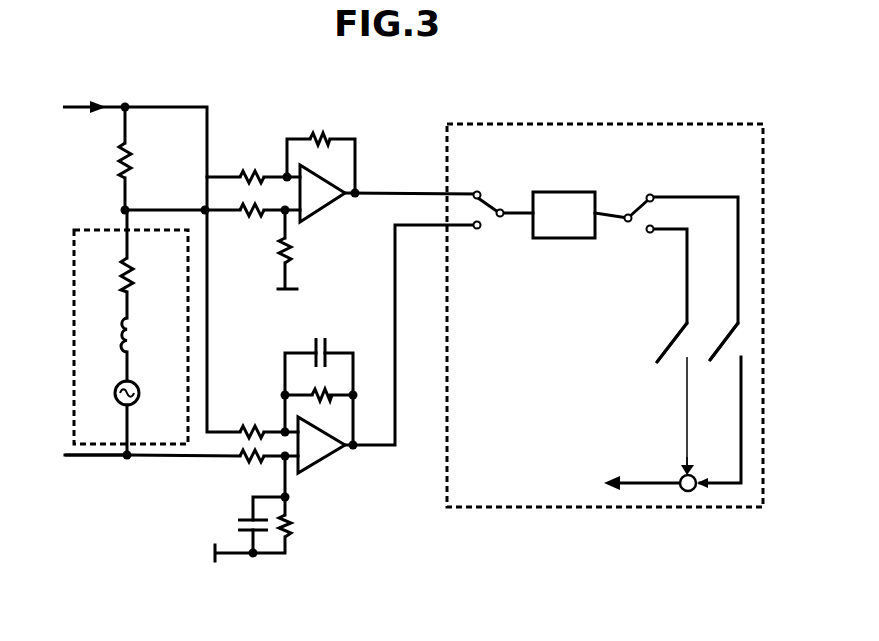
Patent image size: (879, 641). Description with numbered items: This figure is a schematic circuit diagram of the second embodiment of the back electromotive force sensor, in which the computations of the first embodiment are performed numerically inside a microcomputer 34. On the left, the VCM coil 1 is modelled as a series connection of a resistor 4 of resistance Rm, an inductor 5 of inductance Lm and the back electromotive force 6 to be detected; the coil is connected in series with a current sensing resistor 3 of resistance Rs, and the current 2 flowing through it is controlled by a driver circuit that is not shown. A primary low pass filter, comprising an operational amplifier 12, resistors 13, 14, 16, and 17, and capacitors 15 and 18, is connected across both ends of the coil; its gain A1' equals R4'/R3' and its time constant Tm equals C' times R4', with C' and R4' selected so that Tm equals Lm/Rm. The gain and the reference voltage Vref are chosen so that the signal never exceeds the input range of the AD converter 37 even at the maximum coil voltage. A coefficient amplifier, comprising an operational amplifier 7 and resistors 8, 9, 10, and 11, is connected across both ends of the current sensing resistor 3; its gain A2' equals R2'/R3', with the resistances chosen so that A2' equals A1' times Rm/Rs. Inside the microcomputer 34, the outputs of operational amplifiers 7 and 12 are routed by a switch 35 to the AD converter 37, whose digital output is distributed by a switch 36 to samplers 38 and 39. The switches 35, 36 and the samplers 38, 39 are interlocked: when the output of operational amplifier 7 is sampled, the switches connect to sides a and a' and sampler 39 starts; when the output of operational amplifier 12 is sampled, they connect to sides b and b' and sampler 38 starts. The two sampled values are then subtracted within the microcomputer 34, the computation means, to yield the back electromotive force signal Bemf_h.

The VCM coil 1 is at (107, 444).
The current 2 is at (72, 108).
The current sensing resistor 3 is at (121, 158).
The resistor 4 is at (120, 273).
The inductor 5 is at (120, 334).
The back electromotive force 6 is at (117, 400).
The operational amplifier 7 is at (333, 180).
The resistor 8 is at (252, 222).
The resistor 9 is at (248, 170).
The resistor 10 is at (281, 264).
The resistor 11 is at (311, 137).
The operational amplifier 12 is at (324, 462).
The resistor 13 is at (246, 426).
The resistor 14 is at (240, 468).
The capacitor 15 is at (247, 527).
The resistor 16 is at (291, 540).
The resistor 17 is at (333, 400).
The capacitor 18 is at (326, 348).
The microcomputer 34 is at (585, 508).
The switch 35 is at (504, 219).
The switch 36 is at (628, 224).
The AD converter 37 is at (549, 190).
The sampler 38 is at (692, 325).
The sampler 39 is at (743, 330).